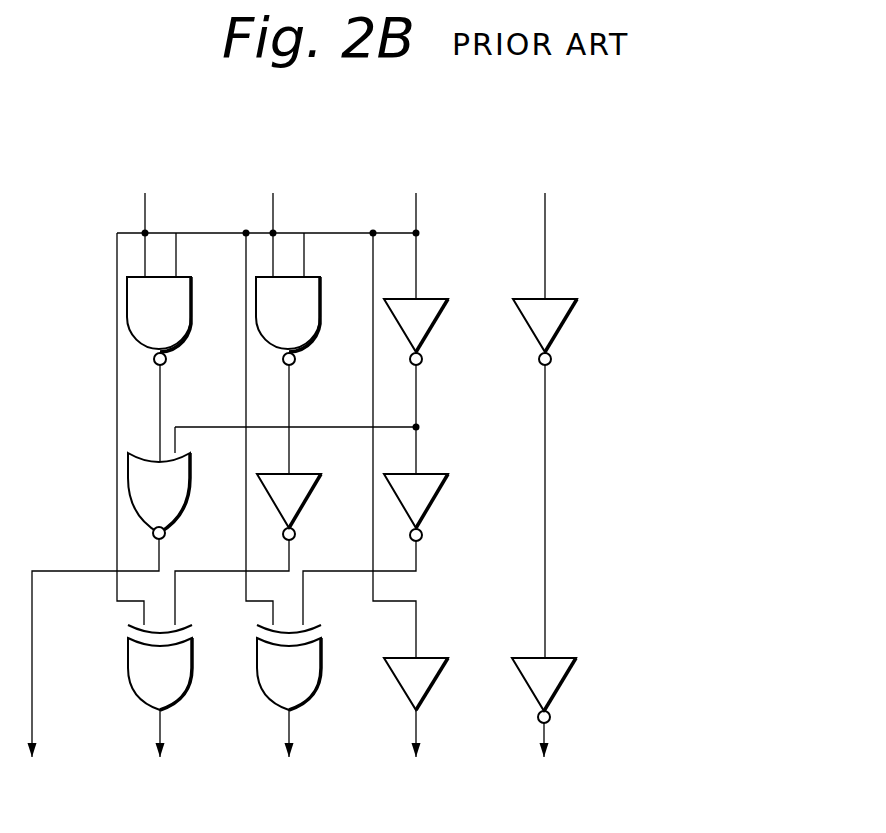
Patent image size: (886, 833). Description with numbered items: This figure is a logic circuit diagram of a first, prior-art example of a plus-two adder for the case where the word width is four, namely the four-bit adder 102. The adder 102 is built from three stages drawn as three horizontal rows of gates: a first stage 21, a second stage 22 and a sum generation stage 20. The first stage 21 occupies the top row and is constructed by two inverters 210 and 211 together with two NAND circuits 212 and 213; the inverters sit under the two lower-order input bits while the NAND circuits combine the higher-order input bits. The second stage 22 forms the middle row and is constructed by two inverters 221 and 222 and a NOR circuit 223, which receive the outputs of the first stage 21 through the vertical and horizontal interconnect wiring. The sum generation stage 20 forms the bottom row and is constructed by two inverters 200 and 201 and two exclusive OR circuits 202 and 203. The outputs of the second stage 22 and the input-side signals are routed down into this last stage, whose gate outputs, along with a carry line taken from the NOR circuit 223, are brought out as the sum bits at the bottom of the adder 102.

The 4-bit adder 102 is at (755, 143).
The first stage 21 is at (703, 316).
The second stage 22 is at (703, 493).
The sum generation stage 20 is at (703, 677).
The NAND circuit 213 is at (190, 334).
The NAND circuit 212 is at (319, 334).
The inverter 211 is at (434, 322).
The inverter 210 is at (574, 312).
The NOR circuit 223 is at (188, 500).
The inverter 222 is at (310, 496).
The inverter 221 is at (433, 490).
The exclusive OR circuit 203 is at (187, 688).
The exclusive OR circuit 202 is at (316, 688).
The inverter 201 is at (433, 678).
The inverter 200 is at (573, 672).